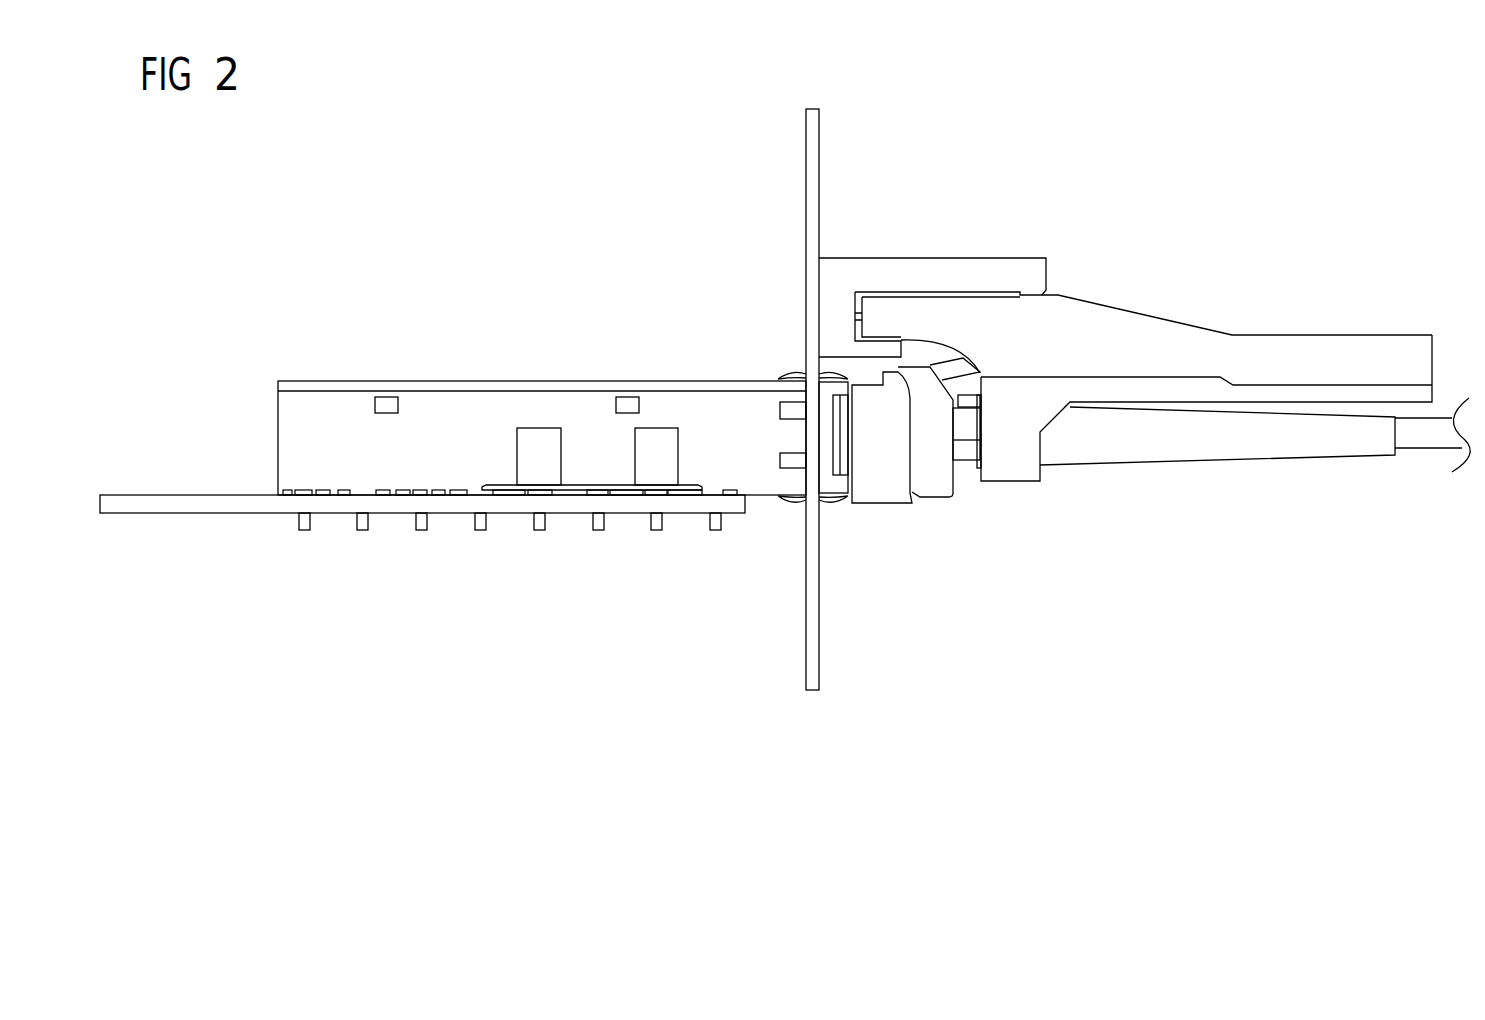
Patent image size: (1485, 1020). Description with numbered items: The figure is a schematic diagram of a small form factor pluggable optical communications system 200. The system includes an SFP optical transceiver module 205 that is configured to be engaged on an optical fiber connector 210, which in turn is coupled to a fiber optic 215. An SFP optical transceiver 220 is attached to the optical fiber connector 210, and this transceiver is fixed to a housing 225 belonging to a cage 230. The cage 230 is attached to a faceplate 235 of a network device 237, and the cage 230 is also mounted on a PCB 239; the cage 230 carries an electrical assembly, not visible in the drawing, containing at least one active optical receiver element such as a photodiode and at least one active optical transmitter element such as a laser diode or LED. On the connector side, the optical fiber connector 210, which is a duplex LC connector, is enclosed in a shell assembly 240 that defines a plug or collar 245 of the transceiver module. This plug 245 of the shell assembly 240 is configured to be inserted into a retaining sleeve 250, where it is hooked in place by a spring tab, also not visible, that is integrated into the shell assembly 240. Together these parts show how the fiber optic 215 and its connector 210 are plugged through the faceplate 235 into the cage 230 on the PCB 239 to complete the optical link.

The small form factor pluggable optical communications system 200 is at (473, 180).
The SFP optical transceiver module 205 is at (1120, 291).
The optical fiber connector 210 is at (1137, 465).
The fiber optic 215 is at (1425, 450).
The SFP optical transceiver 220 is at (882, 485).
The housing 225 is at (725, 407).
The cage 230 is at (837, 485).
The faceplate 235 is at (806, 140).
The network device 237 is at (524, 557).
The PCB 239 is at (178, 493).
The shell assembly 240 is at (1323, 357).
The plug 245 is at (908, 317).
The retaining sleeve 250 is at (838, 280).